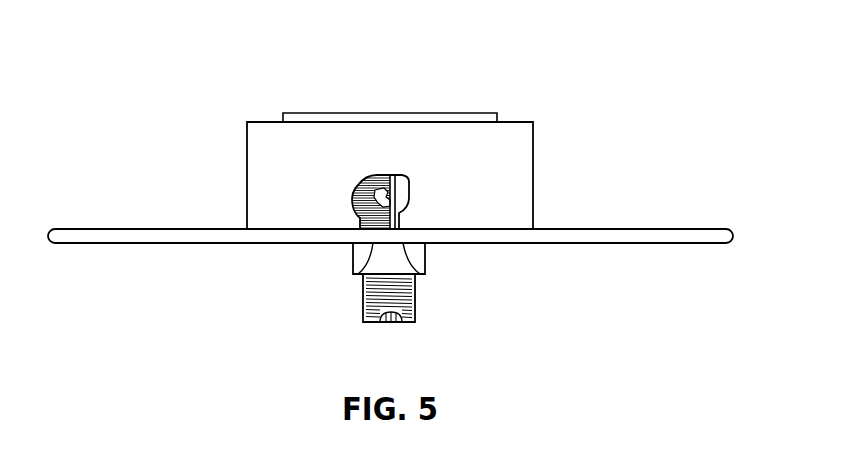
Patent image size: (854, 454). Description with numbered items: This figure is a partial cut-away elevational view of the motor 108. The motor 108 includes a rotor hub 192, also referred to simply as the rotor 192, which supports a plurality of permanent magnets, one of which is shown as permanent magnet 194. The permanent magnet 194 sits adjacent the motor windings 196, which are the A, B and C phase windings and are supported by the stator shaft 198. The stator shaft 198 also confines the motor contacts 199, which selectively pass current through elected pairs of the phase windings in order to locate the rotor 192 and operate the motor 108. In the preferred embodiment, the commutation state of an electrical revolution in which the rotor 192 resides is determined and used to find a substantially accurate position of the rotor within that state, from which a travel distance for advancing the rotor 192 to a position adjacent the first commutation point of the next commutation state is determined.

The motor 108 is at (464, 93).
The rotor hub 192 is at (533, 183).
The permanent magnet 194 is at (400, 211).
The motor windings 196 is at (352, 195).
The stator shaft 198 is at (388, 192).
The motor contacts 199 is at (396, 339).